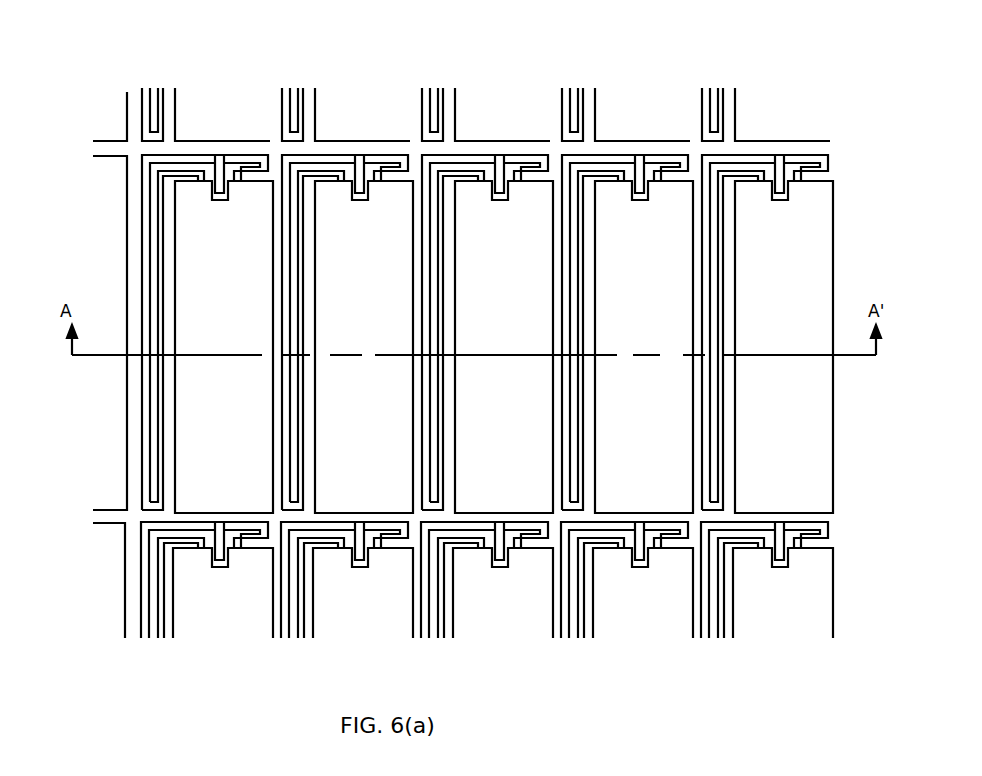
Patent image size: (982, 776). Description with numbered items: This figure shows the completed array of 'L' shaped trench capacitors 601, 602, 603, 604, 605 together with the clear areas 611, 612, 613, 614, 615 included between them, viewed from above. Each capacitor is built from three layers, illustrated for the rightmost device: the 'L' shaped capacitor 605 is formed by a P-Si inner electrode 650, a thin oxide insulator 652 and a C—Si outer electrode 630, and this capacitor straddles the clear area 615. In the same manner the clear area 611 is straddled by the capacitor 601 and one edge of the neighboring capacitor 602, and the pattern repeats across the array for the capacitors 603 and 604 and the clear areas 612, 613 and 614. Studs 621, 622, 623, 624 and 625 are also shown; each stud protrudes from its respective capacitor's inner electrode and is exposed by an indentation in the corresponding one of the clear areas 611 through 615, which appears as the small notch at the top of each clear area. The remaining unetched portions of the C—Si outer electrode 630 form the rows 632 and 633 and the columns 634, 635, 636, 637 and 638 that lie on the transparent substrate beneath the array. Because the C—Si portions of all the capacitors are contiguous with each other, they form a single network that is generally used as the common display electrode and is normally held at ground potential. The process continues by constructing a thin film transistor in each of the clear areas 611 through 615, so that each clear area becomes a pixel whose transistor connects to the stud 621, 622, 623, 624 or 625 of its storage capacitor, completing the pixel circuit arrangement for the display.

The 'L' shaped capacitor 601 is at (152, 222).
The 'L' shaped capacitor 602 is at (292, 222).
The 'L' shaped capacitor 603 is at (432, 222).
The 'L' shaped capacitor 604 is at (572, 222).
The 'L' shaped capacitor 605 is at (713, 222).
The clear area 611 is at (205, 373).
The clear area 612 is at (338, 380).
The clear area 613 is at (478, 388).
The clear area 614 is at (608, 400).
The clear area 615 is at (775, 440).
The stud 621 is at (219, 190).
The stud 622 is at (359, 190).
The stud 623 is at (499, 190).
The stud 624 is at (639, 190).
The stud 625 is at (779, 190).
The C—Si outer electrode 630 is at (762, 208).
The row 632 is at (102, 141).
The row 633 is at (112, 523).
The column 634 is at (172, 613).
The column 635 is at (312, 613).
The column 636 is at (452, 613).
The column 637 is at (593, 613).
The column 638 is at (733, 613).
The P-Si inner electrode 650 is at (714, 400).
The thin oxide insulator 652 is at (720, 328).